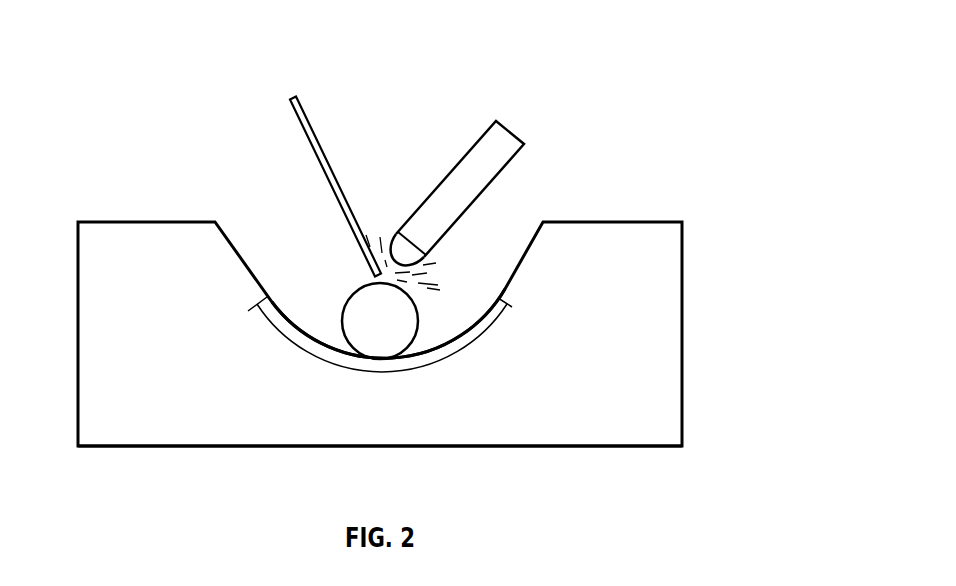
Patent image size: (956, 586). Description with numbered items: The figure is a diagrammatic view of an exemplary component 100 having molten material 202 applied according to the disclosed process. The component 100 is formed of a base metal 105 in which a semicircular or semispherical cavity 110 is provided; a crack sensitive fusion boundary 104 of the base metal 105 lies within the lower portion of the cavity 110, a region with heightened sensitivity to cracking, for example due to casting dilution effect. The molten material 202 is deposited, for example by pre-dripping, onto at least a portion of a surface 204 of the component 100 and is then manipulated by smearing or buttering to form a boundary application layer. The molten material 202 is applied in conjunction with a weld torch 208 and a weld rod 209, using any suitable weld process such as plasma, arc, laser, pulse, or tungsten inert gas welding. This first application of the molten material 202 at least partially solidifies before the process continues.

The component 100 is at (742, 283).
The base metal 105 is at (647, 403).
The crack sensitive fusion boundary 104 is at (423, 368).
The surface 204 is at (460, 318).
The cavity 110 is at (344, 293).
The molten material 202 is at (278, 226).
The weld rod 209 is at (317, 143).
The weld torch 208 is at (458, 157).